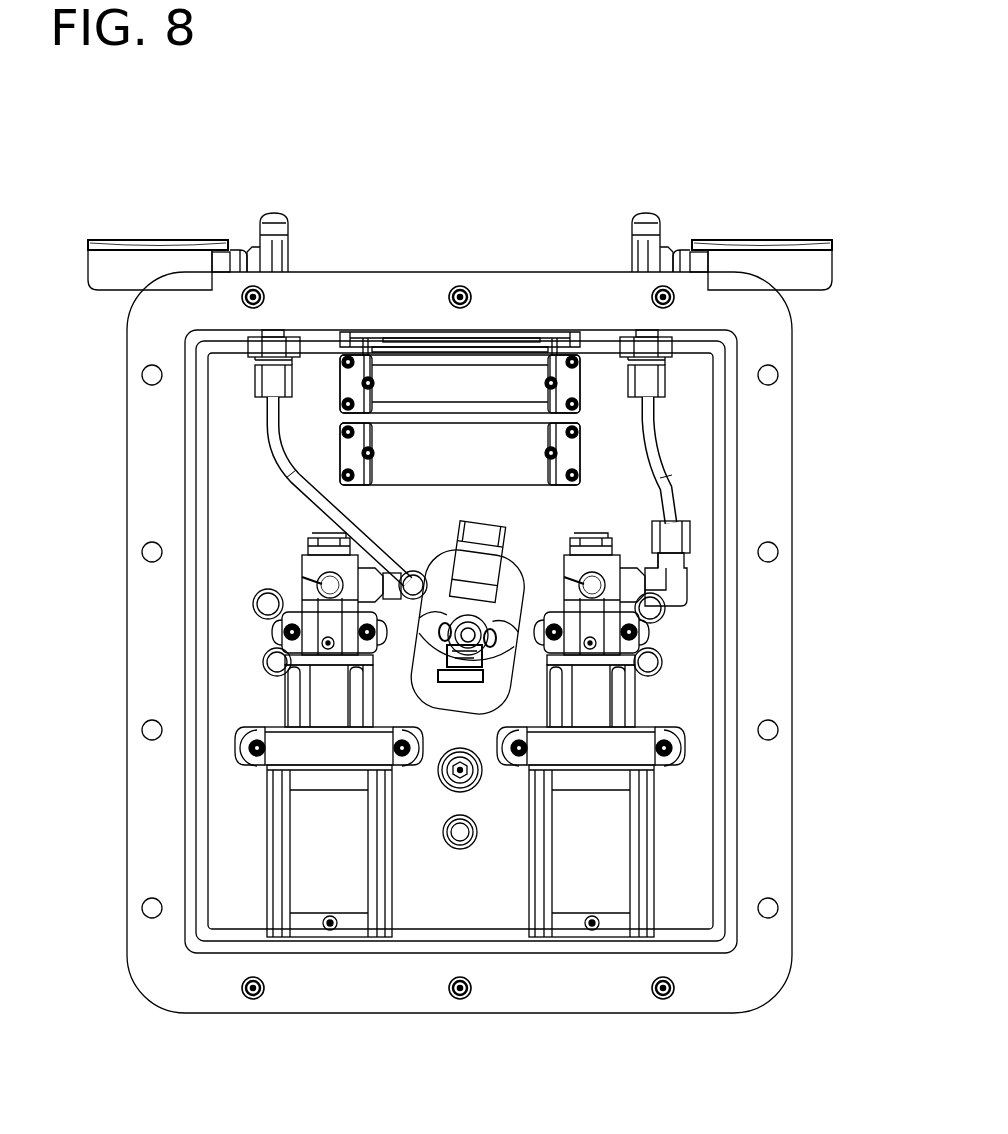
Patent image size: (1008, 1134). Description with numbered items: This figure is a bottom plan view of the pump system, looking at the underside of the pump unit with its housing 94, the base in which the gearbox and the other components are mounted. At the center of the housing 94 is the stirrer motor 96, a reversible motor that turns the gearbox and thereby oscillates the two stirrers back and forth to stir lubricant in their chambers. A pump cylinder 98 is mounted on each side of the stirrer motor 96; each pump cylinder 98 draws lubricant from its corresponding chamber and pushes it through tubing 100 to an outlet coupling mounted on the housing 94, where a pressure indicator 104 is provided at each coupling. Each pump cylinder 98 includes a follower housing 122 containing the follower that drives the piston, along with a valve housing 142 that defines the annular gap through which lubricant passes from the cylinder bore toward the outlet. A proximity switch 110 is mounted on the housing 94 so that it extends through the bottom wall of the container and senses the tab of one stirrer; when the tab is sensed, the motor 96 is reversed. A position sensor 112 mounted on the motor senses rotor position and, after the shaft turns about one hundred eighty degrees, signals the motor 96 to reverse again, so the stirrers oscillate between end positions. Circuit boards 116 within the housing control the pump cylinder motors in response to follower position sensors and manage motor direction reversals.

The housing 94 is at (792, 822).
The stirrer motor 96 is at (647, 617).
The pump cylinder 98 is at (322, 584).
The tubing 100 is at (268, 440).
The pressure indicator 104 is at (157, 240).
The proximity switch 110 is at (450, 790).
The position sensor 112 is at (485, 620).
The circuit boards 116 is at (485, 403).
The follower housing 122 is at (635, 697).
The valve housing 142 is at (305, 937).